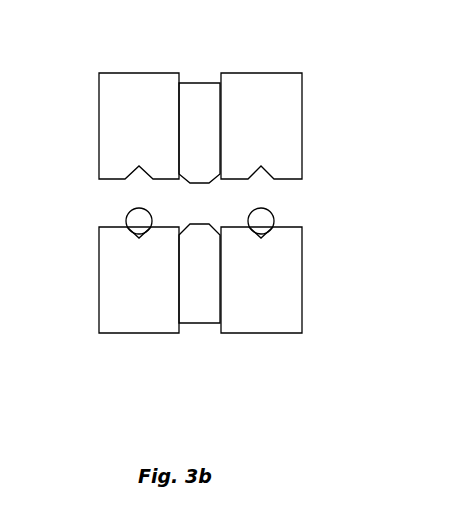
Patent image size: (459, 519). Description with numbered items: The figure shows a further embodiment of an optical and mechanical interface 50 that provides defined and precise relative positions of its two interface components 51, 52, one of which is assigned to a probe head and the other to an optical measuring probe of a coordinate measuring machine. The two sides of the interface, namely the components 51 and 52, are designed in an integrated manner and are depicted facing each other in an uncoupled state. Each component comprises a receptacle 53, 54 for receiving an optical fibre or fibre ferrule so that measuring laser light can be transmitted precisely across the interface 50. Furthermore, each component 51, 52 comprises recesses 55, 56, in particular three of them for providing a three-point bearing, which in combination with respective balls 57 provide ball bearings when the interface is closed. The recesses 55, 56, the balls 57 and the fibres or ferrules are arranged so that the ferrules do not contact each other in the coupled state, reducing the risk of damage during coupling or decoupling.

The optical and mechanical interface 50 is at (224, 207).
The interface component 51 is at (195, 102).
The interface component 52 is at (204, 292).
The receptacle 53 is at (171, 102).
The receptacle 54 is at (171, 308).
The recess 55 is at (167, 126).
The recess 56 is at (153, 254).
The ball 57 is at (153, 213).